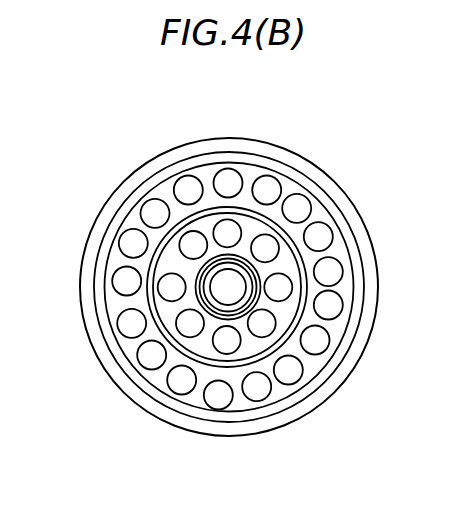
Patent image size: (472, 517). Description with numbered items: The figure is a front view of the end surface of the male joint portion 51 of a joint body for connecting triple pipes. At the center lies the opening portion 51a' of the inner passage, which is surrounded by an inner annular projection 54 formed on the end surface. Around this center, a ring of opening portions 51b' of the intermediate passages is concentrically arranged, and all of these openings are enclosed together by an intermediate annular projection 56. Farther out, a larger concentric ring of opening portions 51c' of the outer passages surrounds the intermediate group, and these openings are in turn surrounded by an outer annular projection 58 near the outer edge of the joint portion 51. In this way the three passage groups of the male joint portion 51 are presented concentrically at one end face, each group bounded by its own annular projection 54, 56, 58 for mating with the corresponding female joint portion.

The male joint portion 51 is at (161, 151).
The opening portion of the inner passage 51a' is at (319, 261).
The opening portions of the intermediate passages 51b' is at (161, 286).
The opening portions of the outer passages 51c' is at (227, 255).
The inner annular projection 54 is at (254, 300).
The intermediate annular projection 56 is at (283, 340).
The outer annular projection 58 is at (286, 402).